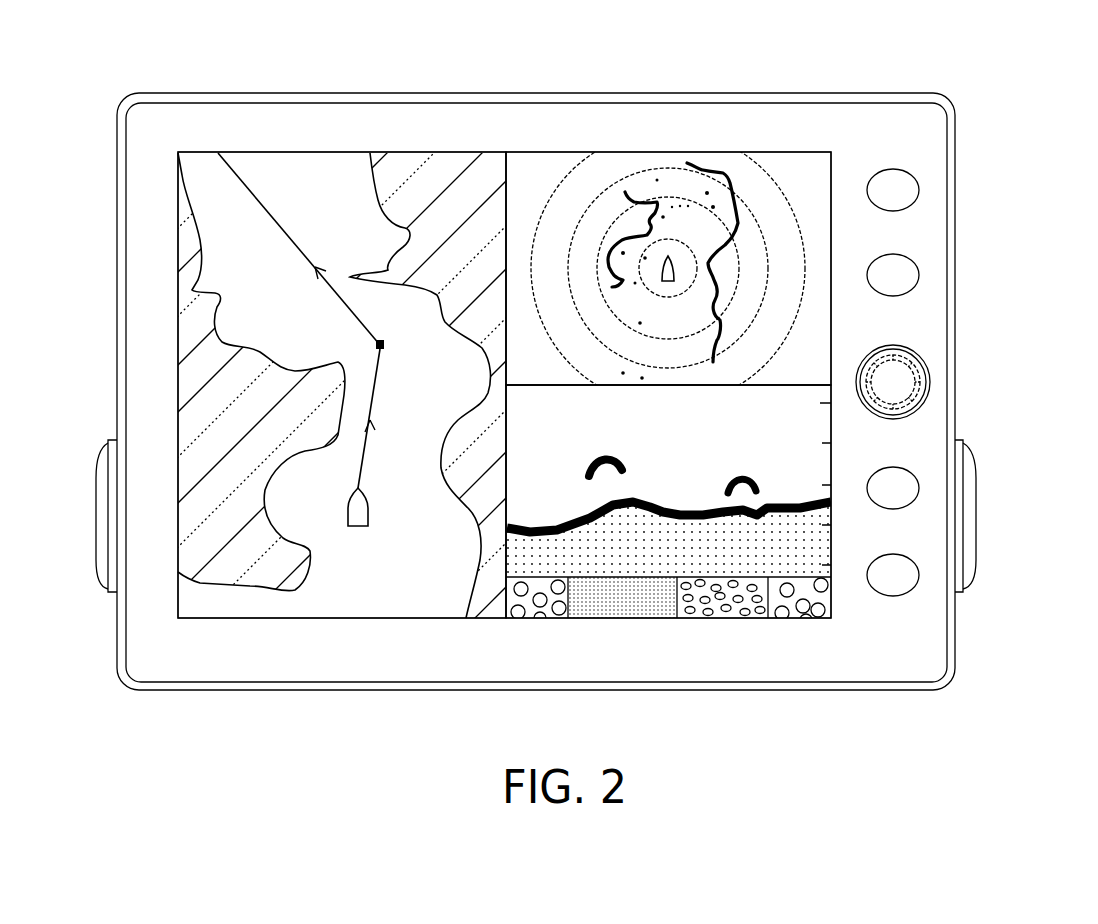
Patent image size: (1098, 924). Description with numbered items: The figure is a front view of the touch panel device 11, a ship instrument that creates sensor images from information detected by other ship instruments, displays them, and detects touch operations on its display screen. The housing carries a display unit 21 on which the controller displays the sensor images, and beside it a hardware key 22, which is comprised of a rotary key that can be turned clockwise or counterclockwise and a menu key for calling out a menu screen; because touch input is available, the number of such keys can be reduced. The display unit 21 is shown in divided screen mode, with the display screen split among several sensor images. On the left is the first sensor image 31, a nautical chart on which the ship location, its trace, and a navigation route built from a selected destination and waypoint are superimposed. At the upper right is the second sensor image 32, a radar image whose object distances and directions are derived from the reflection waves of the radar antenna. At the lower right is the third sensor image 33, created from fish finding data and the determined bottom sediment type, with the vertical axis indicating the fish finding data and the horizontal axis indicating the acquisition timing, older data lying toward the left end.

The touch panel device 11 is at (1024, 122).
The display unit 21 is at (843, 155).
The hardware key 22 is at (930, 353).
The first sensor image 31 is at (178, 180).
The second sensor image 32 is at (830, 245).
The third sensor image 33 is at (833, 555).